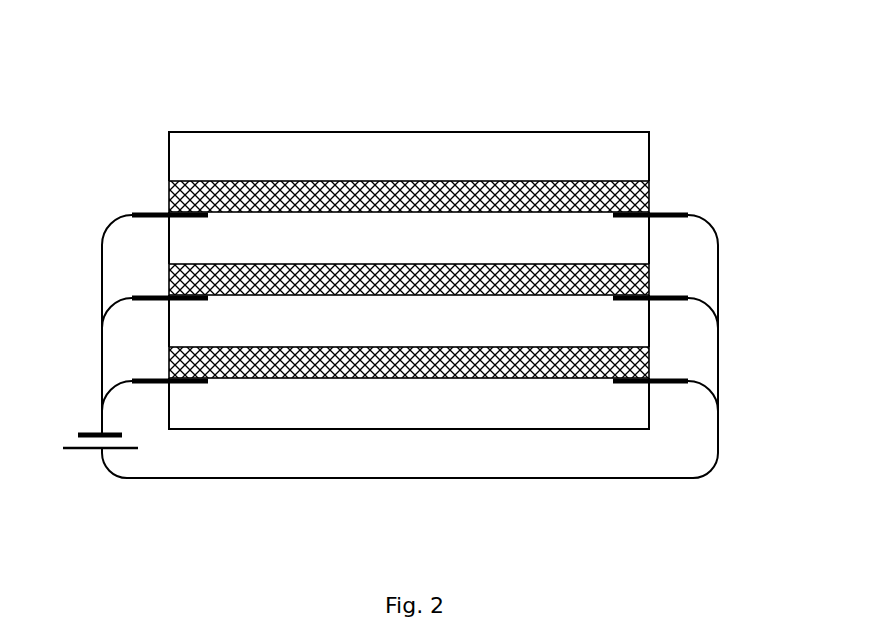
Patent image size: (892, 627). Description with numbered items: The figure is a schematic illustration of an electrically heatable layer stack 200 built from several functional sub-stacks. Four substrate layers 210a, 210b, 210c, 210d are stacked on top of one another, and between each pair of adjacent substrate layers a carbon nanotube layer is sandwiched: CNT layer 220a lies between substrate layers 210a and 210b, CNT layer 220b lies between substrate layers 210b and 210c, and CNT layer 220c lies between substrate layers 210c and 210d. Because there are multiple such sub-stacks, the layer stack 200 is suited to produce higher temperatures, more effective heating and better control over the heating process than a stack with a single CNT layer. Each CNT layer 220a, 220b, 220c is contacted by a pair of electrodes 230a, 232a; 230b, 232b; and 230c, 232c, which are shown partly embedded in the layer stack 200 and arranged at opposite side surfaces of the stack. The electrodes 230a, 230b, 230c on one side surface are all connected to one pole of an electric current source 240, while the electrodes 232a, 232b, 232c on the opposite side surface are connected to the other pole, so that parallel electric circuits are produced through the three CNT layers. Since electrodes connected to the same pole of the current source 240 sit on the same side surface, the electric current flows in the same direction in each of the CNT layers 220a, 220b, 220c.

The electrically heatable layer stack 200 is at (233, 90).
The substrate layer 210a is at (409, 156).
The substrate layer 210b is at (409, 238).
The substrate layer 210c is at (409, 321).
The substrate layer 210d is at (409, 403).
The CNT layer 220a is at (409, 196).
The CNT layer 220b is at (409, 279).
The CNT layer 220c is at (409, 362).
The electrode 230a is at (147, 212).
The electrode 230b is at (147, 295).
The electrode 230c is at (147, 379).
The electrode 232a is at (676, 212).
The electrode 232b is at (676, 295).
The electrode 232c is at (676, 379).
The electric current source 240 is at (62, 415).